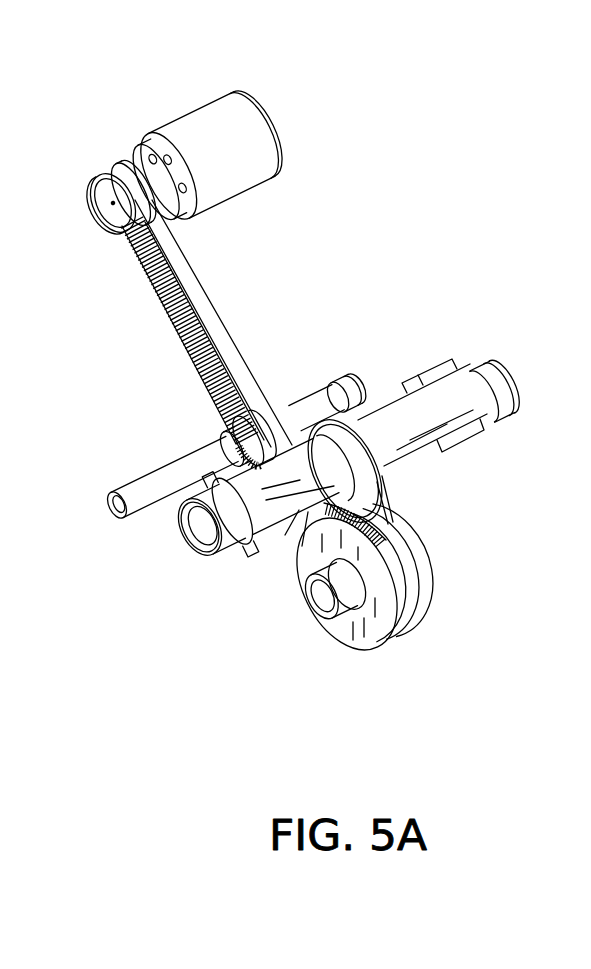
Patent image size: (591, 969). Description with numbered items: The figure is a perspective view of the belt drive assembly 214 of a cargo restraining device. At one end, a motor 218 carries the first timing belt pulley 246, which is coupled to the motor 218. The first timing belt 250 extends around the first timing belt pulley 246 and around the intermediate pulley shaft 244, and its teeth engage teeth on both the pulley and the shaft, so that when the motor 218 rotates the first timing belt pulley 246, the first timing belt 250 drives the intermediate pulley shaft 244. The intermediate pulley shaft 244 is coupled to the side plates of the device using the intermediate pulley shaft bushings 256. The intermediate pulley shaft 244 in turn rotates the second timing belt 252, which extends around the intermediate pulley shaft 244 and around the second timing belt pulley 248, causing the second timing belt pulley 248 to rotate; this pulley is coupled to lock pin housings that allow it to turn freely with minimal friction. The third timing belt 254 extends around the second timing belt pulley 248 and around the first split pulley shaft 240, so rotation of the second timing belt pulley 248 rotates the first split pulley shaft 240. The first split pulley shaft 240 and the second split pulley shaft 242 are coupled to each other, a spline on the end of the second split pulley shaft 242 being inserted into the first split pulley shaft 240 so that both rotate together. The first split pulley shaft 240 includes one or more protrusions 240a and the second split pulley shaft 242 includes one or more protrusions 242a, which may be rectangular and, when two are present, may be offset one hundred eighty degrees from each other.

The belt drive assembly 214 is at (431, 170).
The motor 218 is at (213, 111).
The first timing belt pulley 246 is at (105, 193).
The first timing belt 250 is at (203, 288).
The intermediate pulley shaft 244 is at (183, 477).
The intermediate pulley shaft bushings 256 is at (351, 386).
The first split pulley shaft 240 is at (462, 392).
The protrusions 240a is at (443, 377).
The second split pulley shaft 242 is at (230, 550).
The protrusions 242a is at (257, 558).
The third timing belt 254 is at (380, 523).
The second timing belt 252 is at (430, 590).
The second timing belt pulley 248 is at (346, 645).